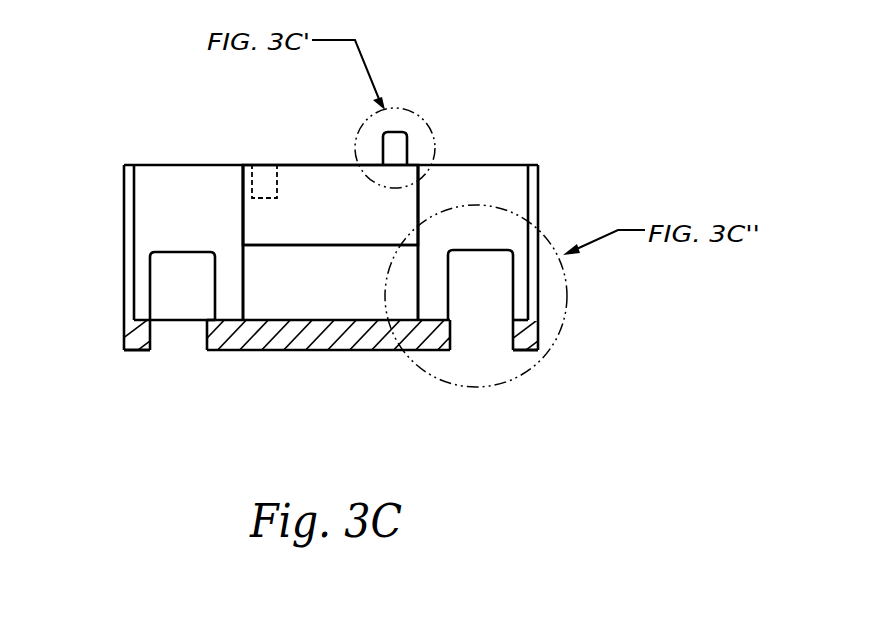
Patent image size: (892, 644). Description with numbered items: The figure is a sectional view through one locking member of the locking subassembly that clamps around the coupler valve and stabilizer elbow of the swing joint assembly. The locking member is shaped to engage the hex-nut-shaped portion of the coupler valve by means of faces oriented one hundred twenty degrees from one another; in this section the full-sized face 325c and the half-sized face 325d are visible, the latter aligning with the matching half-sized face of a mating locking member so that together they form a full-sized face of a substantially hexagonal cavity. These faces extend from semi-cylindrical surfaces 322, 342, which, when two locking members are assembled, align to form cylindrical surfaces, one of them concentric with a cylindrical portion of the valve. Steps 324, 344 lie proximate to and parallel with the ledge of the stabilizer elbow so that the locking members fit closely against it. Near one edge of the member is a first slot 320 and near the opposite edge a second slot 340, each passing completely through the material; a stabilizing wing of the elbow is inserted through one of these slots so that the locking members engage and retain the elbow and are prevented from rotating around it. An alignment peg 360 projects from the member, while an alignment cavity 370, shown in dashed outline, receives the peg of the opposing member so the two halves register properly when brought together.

The first slot 320 is at (166, 338).
The semi-cylindrical surface 322 is at (181, 186).
The step 324 is at (241, 217).
The full-sized face 325c is at (333, 293).
The half-sized face 325d is at (332, 218).
The second slot 340 is at (495, 344).
The semi-cylindrical surface 342 is at (513, 198).
The step 344 is at (418, 197).
The alignment peg 360 is at (415, 146).
The alignment cavity 370 is at (262, 178).